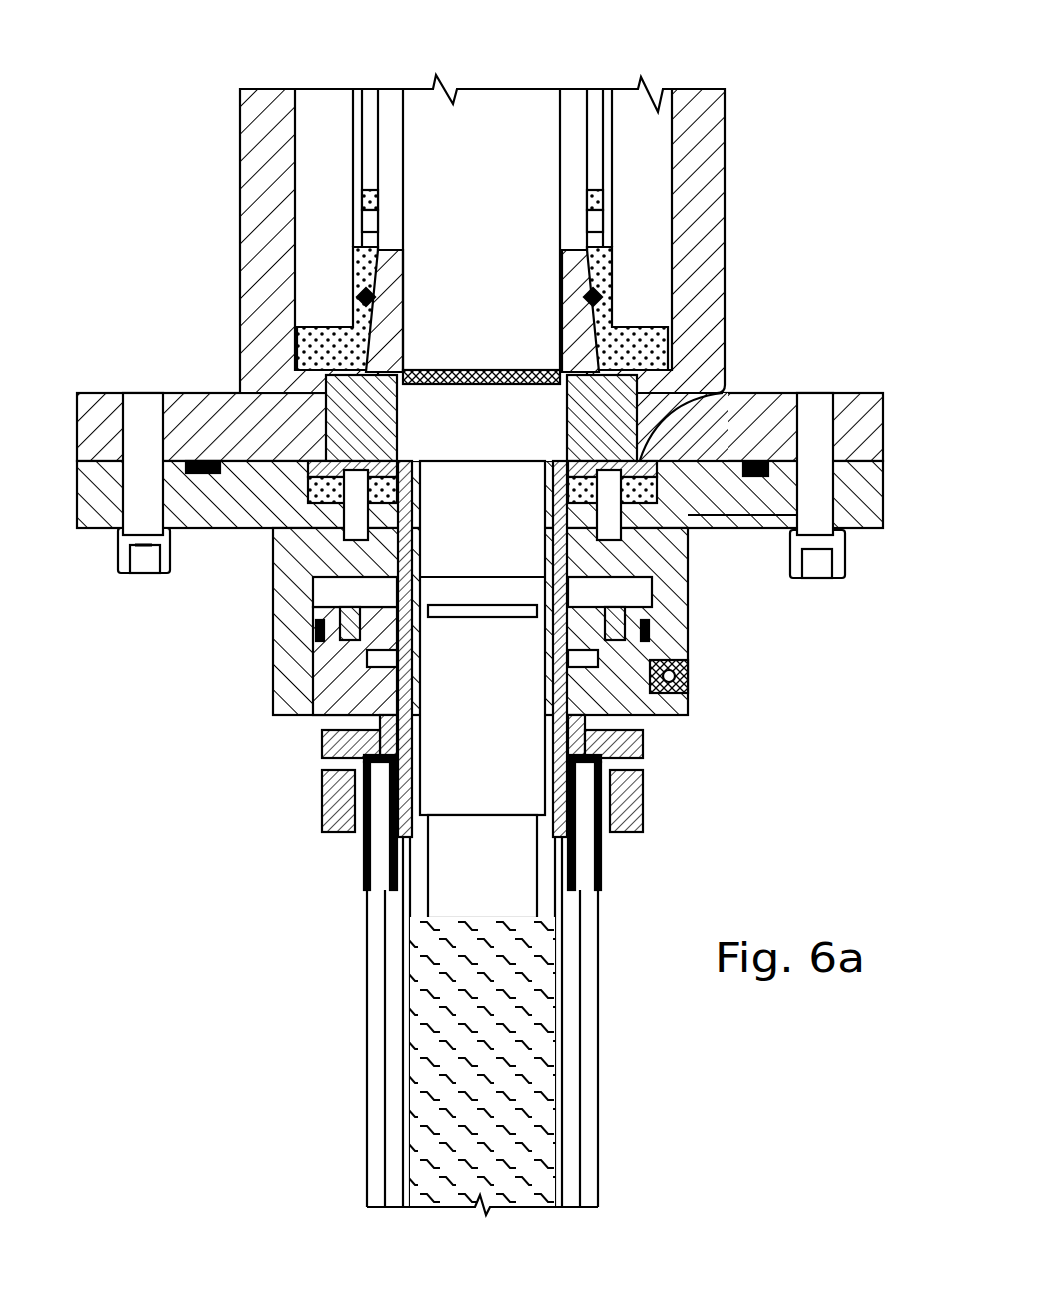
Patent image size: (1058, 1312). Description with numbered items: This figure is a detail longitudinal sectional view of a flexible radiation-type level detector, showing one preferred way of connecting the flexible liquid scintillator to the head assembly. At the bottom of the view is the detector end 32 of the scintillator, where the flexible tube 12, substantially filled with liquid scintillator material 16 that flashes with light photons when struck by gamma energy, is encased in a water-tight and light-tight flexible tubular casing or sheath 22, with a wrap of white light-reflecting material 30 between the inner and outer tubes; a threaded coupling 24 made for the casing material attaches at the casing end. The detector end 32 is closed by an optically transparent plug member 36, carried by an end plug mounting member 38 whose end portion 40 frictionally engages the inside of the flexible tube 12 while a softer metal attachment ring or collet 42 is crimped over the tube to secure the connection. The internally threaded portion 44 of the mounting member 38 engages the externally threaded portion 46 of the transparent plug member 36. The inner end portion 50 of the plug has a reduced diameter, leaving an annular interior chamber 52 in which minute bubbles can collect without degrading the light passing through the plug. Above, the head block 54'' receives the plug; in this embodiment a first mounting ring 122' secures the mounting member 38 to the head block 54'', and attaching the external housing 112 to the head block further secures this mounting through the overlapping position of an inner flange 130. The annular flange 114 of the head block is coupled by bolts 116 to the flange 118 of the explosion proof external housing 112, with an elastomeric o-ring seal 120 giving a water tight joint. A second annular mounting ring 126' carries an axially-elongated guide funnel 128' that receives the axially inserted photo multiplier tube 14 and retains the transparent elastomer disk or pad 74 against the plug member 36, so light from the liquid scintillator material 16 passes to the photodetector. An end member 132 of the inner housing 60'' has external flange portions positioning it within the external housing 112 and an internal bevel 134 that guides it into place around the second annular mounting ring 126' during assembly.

The photo multiplier tube 14 is at (528, 112).
The inner housing 60'' is at (596, 162).
The external housing 112 is at (722, 183).
The end member 132 is at (640, 343).
The internal bevel 134 is at (358, 298).
The guide funnel 128' is at (553, 271).
The transparent elastomer disk or pad 74 is at (441, 370).
The first mounting ring 122' is at (276, 375).
The second annular mounting ring 126' is at (681, 373).
The inner flange 130 is at (735, 395).
The flange 118 is at (85, 390).
The elastomeric o-ring seal 120 is at (750, 428).
The bolts 116 is at (141, 393).
The annular flange 114 is at (97, 528).
The head block 54'' is at (521, 621).
The internally threaded portion 44 is at (397, 545).
The externally threaded portion 46 is at (415, 548).
The end plug mounting member 38 is at (345, 630).
The attachment ring or collet 42 is at (335, 732).
The end portion 40 is at (335, 803).
The transparent plug member 36 is at (445, 775).
The inner end portion 50 is at (545, 903).
The annular interior chamber 52 is at (430, 893).
The light-reflecting material 30 is at (403, 1030).
The flexible tubular casing or sheath 22 is at (598, 1140).
The flexible tube 12 is at (560, 1095).
The liquid scintillator material 16 is at (430, 1085).
The threaded coupling 24 is at (662, 795).
The detector end 32 is at (633, 891).